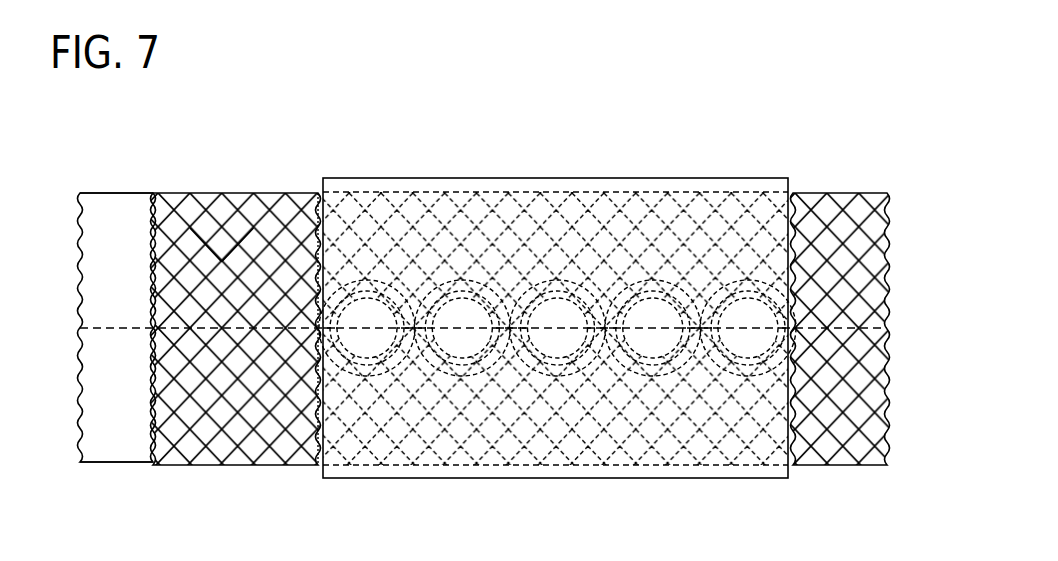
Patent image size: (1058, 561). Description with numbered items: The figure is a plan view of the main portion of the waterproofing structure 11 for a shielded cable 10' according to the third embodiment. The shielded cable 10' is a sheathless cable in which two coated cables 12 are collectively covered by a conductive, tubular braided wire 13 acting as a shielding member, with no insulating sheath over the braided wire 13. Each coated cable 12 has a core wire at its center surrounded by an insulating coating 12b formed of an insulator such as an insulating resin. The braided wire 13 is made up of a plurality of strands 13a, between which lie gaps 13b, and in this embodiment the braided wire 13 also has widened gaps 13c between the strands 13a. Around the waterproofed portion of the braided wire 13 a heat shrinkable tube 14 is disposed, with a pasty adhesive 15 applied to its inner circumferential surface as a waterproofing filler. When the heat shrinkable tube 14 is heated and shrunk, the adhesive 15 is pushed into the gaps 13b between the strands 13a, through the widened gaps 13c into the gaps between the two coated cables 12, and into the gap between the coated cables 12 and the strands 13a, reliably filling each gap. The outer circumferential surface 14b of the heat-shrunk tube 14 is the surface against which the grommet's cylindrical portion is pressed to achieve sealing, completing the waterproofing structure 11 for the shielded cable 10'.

The shielded cable 10' is at (489, 204).
The waterproofing structure 11 is at (490, 165).
The coated cable 12 is at (132, 193).
The insulating coating 12b is at (118, 198).
The braided wire 13 is at (228, 188).
The strands 13a is at (237, 417).
The gaps 13b is at (208, 397).
The widened gaps 13c is at (373, 312).
The heat shrinkable tube 14 is at (673, 177).
The outer circumferential surface 14b is at (620, 178).
The adhesive 15 is at (312, 437).